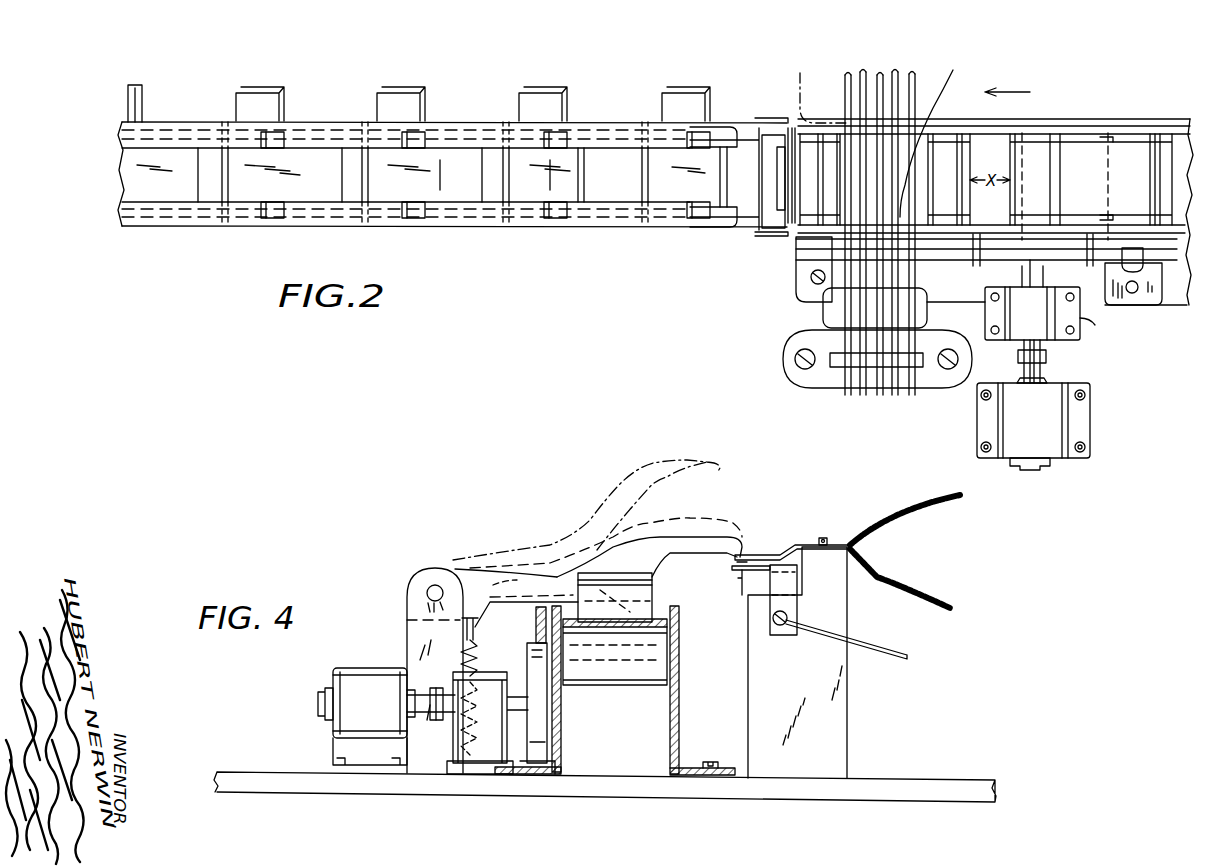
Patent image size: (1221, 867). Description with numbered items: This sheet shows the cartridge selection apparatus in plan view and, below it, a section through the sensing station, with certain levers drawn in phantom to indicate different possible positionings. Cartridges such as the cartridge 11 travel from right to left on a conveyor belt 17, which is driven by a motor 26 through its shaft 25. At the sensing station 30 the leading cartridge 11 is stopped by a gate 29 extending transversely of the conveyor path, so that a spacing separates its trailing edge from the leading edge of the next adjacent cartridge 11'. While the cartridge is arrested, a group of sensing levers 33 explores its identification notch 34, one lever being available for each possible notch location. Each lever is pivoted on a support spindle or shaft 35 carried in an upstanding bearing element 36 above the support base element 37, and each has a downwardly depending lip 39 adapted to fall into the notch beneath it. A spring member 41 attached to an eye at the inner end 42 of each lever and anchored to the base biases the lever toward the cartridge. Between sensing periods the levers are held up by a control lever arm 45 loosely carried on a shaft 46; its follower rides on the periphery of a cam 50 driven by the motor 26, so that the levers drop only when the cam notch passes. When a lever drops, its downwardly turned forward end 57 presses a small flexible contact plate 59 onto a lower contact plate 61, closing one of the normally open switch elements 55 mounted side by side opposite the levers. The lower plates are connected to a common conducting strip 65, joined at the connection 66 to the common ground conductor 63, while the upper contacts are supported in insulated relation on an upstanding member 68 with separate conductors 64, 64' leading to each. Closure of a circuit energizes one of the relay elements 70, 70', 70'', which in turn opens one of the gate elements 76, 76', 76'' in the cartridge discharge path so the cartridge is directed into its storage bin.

In FIG. 2, the cartridge 11 is at (954, 154).
In FIG. 4, the cartridge 11 is at (636, 597).
In FIG. 2, the next adjacent cartridge 11' is at (1080, 161).
In FIG. 2, the conveyor belt 17 is at (1160, 140).
In FIG. 4, the conveyor belt 17 is at (679, 641).
In FIG. 2, the shaft 25 is at (1042, 374).
In FIG. 4, the shaft 25 is at (427, 714).
In FIG. 2, the motor 26 is at (1060, 419).
In FIG. 4, the motor 26 is at (362, 668).
In FIG. 2, the gate 29 is at (782, 228).
In FIG. 2, the sensing station 30 is at (830, 101).
In FIG. 2, the sensing levers 33 is at (848, 80).
In FIG. 4, the sensing levers 33 is at (657, 470).
In FIG. 2, the identification notch 34 is at (1088, 217).
In FIG. 2, the support spindle or shaft 35 is at (830, 368).
In FIG. 4, the support spindle or shaft 35 is at (430, 590).
In FIG. 2, the upstanding bearing element 36 is at (807, 341).
In FIG. 4, the upstanding bearing element 36 is at (407, 620).
In FIG. 4, the support base element 37 is at (292, 772).
In FIG. 4, the downwardly depending portion or lip 39 is at (587, 563).
In FIG. 4, the spring member 41 is at (477, 660).
In FIG. 4, the inner end of lever 42 is at (473, 627).
In FIG. 2, the control lever arm 45 is at (828, 252).
In FIG. 4, the control lever arm 45 is at (536, 616).
In FIG. 2, the shaft 46 is at (1140, 257).
In FIG. 2, the cam 50 is at (980, 266).
In FIG. 4, the switch elements 55 is at (934, 557).
In FIG. 4, the forward end of lever 57 is at (733, 570).
In FIG. 4, the flexible contact plate 59 is at (758, 553).
In FIG. 4, the lower contact plate 61 is at (742, 589).
In FIG. 4, the common ground conductor 63 is at (905, 660).
In FIG. 4, the energized conductor line 64 is at (914, 578).
In FIG. 4, the conductor 64' is at (905, 509).
In FIG. 4, the common conducting strip 65 is at (790, 586).
In FIG. 4, the connection 66 is at (779, 636).
In FIG. 4, the upstanding member 68 is at (835, 543).
In FIG. 2, the relay element 70 is at (686, 139).
In FIG. 2, the relay element 70' is at (565, 149).
In FIG. 2, the relay element 70'' is at (419, 138).
In FIG. 2, the gate element side member 76 is at (453, 180).
In FIG. 2, the gate element side member 76' is at (549, 214).
In FIG. 2, the gate element side member 76'' is at (465, 212).